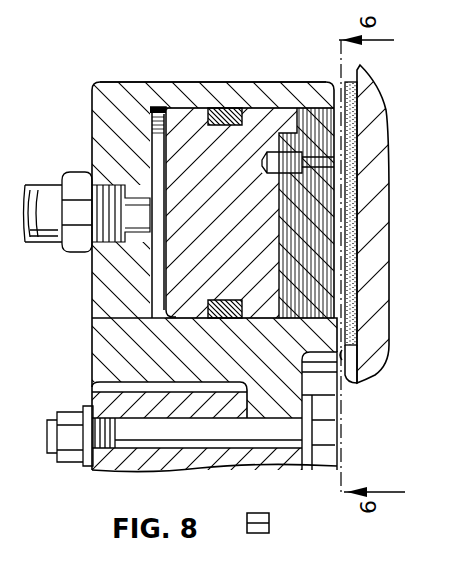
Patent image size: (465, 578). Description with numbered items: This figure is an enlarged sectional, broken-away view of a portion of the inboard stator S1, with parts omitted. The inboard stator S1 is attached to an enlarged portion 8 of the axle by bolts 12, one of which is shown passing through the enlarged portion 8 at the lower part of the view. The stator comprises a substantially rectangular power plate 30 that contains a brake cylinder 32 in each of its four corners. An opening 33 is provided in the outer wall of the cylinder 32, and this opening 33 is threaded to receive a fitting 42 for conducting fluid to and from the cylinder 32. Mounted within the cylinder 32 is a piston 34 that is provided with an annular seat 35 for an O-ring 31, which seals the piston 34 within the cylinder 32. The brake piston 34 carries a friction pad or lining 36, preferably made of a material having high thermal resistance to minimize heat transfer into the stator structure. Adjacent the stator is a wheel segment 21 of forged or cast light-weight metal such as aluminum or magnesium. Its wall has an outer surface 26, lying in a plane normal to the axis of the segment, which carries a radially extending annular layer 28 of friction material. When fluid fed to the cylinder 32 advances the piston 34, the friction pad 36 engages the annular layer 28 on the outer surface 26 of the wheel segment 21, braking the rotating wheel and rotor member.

The inboard stator S1 is at (178, 72).
The enlarged portion 8 is at (113, 403).
The bolts 12 is at (137, 435).
The wheel segment 21 is at (394, 125).
The outer surface 26 is at (355, 383).
The annular layer of friction material 28 is at (345, 287).
The power plate 30 is at (292, 397).
The O-ring 31 is at (236, 107).
The brake cylinder 32 is at (205, 93).
The opening 33 is at (137, 223).
The piston 34 is at (177, 300).
The annular seat 35 is at (230, 132).
The friction pad 36 is at (315, 217).
The fitting 42 is at (77, 178).